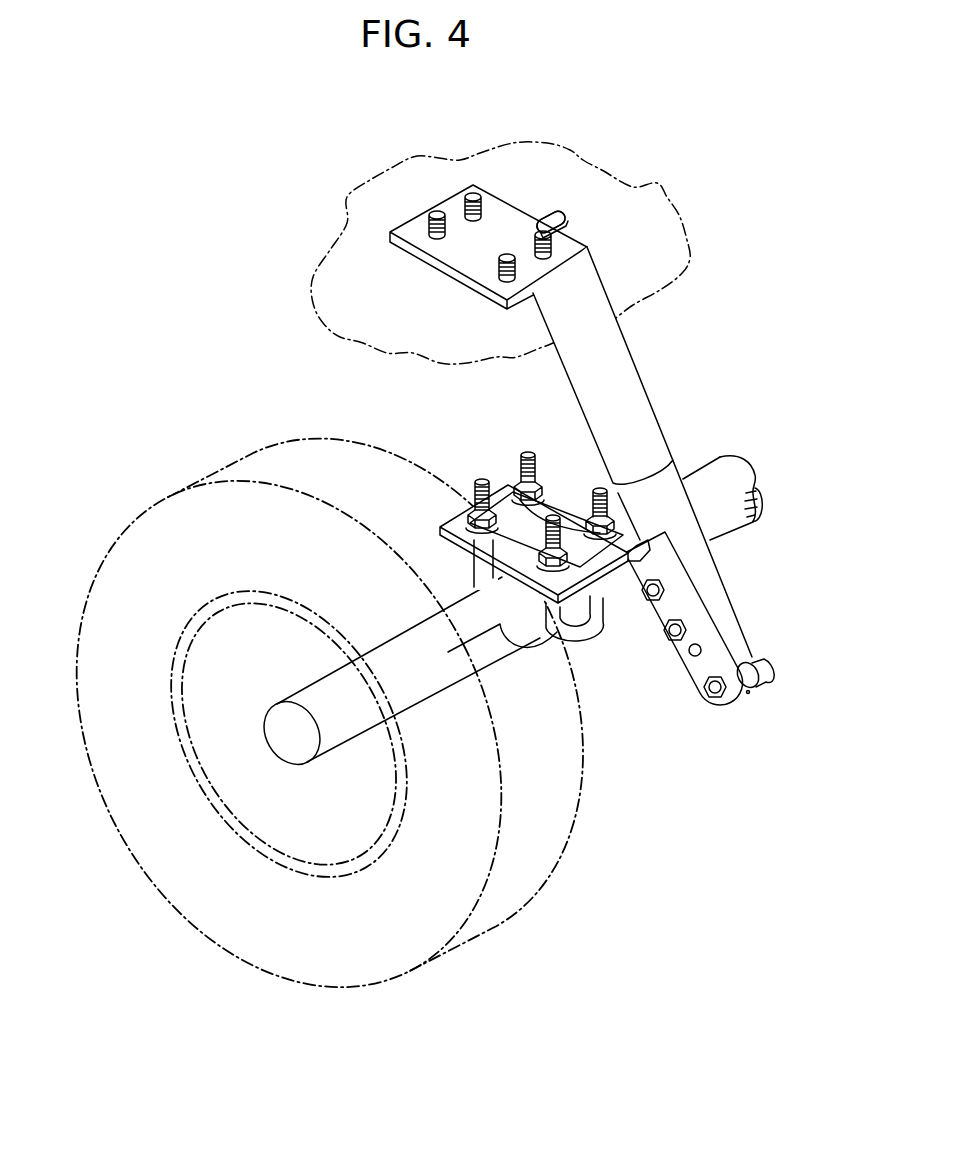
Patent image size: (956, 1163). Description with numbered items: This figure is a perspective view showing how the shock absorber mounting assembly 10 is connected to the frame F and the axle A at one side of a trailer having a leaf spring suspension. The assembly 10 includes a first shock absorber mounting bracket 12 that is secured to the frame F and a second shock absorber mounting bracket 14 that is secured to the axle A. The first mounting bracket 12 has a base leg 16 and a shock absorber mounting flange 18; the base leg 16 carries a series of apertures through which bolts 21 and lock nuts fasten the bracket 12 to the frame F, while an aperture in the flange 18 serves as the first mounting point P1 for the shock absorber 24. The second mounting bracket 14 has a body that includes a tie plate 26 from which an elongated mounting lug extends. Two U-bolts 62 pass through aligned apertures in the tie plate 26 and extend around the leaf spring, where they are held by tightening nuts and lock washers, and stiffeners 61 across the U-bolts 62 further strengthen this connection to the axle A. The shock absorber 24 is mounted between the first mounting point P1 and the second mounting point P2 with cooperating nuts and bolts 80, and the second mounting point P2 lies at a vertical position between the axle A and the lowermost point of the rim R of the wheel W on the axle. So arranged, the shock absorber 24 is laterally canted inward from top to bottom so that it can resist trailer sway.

The shock absorber mounting assembly 10 is at (534, 446).
The first shock absorber mounting bracket 12 is at (498, 224).
The second shock absorber mounting bracket 14 is at (517, 553).
The base leg 16 is at (463, 252).
The shock absorber mounting flange 18 is at (567, 280).
The bolts 21 is at (432, 226).
The shock absorber 24 is at (627, 382).
The tie plate 26 is at (582, 563).
The stiffeners 61 is at (520, 538).
The U-bolts 62 is at (528, 452).
The nuts and bolts 80 is at (567, 223).
The axle A is at (710, 477).
The frame F is at (400, 177).
The first mounting point P1 is at (557, 205).
The second mounting point P2 is at (748, 693).
The rim R is at (273, 867).
The wheel W is at (185, 863).